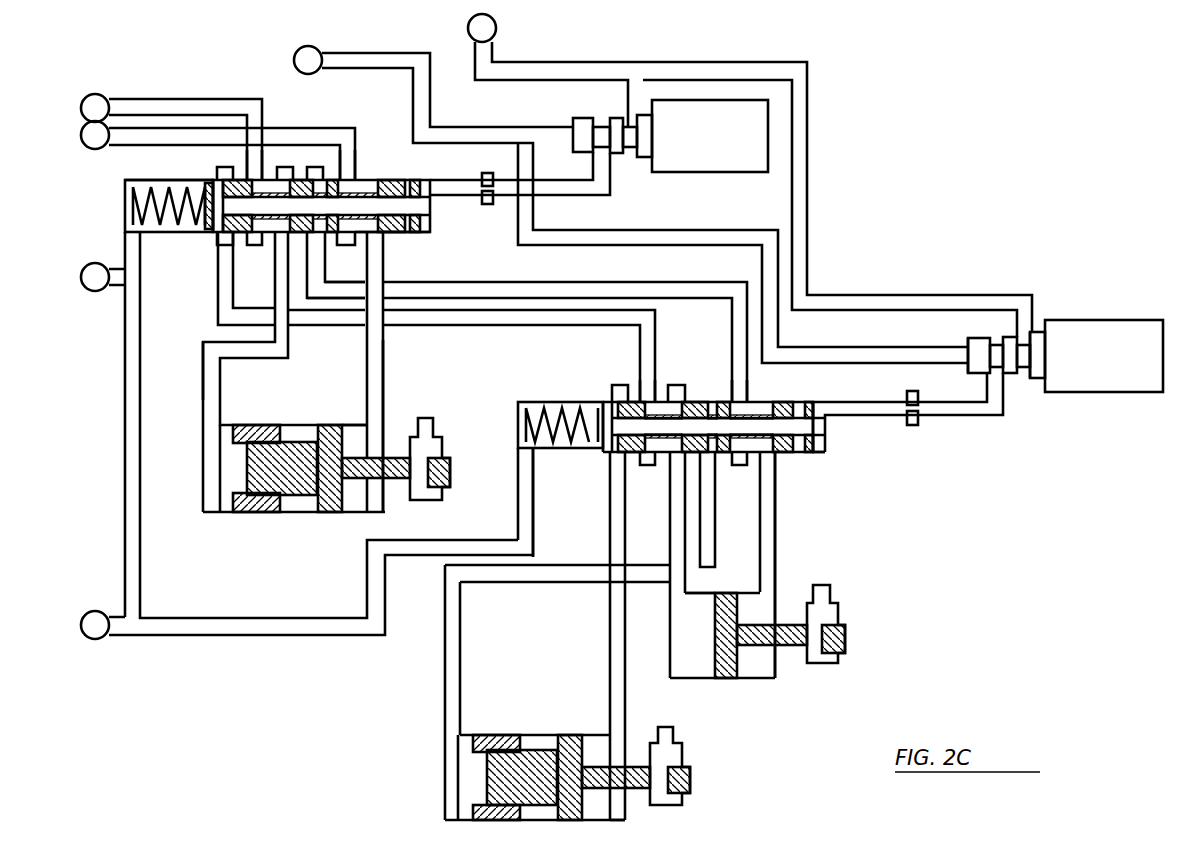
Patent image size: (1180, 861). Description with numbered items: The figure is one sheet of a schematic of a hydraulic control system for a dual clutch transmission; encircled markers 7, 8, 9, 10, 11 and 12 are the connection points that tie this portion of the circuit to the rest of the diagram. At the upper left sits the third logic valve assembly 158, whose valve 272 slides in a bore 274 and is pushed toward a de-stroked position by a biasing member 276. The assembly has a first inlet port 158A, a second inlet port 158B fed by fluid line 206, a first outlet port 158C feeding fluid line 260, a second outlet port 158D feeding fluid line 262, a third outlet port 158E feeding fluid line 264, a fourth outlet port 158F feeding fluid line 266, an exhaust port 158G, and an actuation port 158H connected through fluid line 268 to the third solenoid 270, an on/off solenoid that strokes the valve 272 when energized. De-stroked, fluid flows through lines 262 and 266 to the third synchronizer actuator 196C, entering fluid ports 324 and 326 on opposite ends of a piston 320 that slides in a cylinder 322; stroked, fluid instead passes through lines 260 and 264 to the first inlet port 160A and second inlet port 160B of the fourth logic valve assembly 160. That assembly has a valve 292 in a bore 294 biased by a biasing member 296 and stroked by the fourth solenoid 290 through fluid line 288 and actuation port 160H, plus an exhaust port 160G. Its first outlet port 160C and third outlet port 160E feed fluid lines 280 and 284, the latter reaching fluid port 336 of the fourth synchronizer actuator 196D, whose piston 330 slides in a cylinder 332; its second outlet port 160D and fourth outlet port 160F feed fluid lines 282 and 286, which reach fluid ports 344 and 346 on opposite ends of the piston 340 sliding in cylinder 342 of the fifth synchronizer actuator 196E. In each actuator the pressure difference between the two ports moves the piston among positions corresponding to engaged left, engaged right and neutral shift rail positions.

The port connection 7 is at (750, 175).
The port connection 8 is at (631, 204).
The port connection 9 is at (171, 137).
The port connection 10 is at (218, 150).
The port connection 11 is at (103, 277).
The port connection 12 is at (307, 543).
The fluid line 206 is at (203, 128).
The third logic valve assembly 158 is at (452, 170).
The first inlet port 158A is at (257, 178).
The second inlet port 158B is at (347, 178).
The first outlet port 158C is at (221, 280).
The second outlet port 158D is at (245, 310).
The third outlet port 158E is at (316, 260).
The fourth outlet port 158F is at (385, 240).
The exhaust port 158G is at (130, 232).
The actuation port 158H is at (432, 182).
The bore 274 is at (128, 180).
The biasing member 276 is at (130, 216).
The valve 272 is at (182, 226).
The fluid line 268 is at (612, 195).
The third solenoid 270 is at (710, 136).
The fluid line 264 is at (505, 280).
The fluid line 262 is at (205, 355).
The fluid line 266 is at (386, 345).
The fluid line 260 is at (493, 327).
The fourth logic valve assembly 160 is at (822, 455).
The first inlet port 160A is at (648, 400).
The second inlet port 160B is at (740, 400).
The first outlet port 160C is at (615, 460).
The second outlet port 160D is at (672, 480).
The third outlet port 160E is at (712, 470).
The fourth outlet port 160F is at (768, 465).
The exhaust port 160G is at (524, 455).
The actuation port 160H is at (815, 430).
The valve 292 is at (787, 400).
The fluid line 288 is at (980, 418).
The fourth solenoid 290 is at (1065, 356).
The bore 294 is at (518, 405).
The biasing member 296 is at (530, 402).
The third synchronizer actuator 196C is at (203, 447).
The fluid port 324 is at (208, 423).
The fluid port 326 is at (378, 427).
The piston housing or cylinder 322 is at (370, 510).
The piston 320 is at (327, 500).
The fluid line 280 is at (443, 665).
The fluid line 282 is at (670, 522).
The fluid line 284 is at (608, 662).
The fluid port 344 is at (680, 598).
The fluid port 336 is at (612, 735).
The piston 330 is at (520, 755).
The piston housing or cylinder 332 is at (612, 816).
The fourth synchronizer actuator 196D is at (445, 800).
The fifth synchronizer actuator 196E is at (758, 680).
The fluid line 286 is at (778, 555).
The fluid port 346 is at (773, 590).
The piston housing or cylinder 342 is at (698, 672).
The piston 340 is at (840, 628).